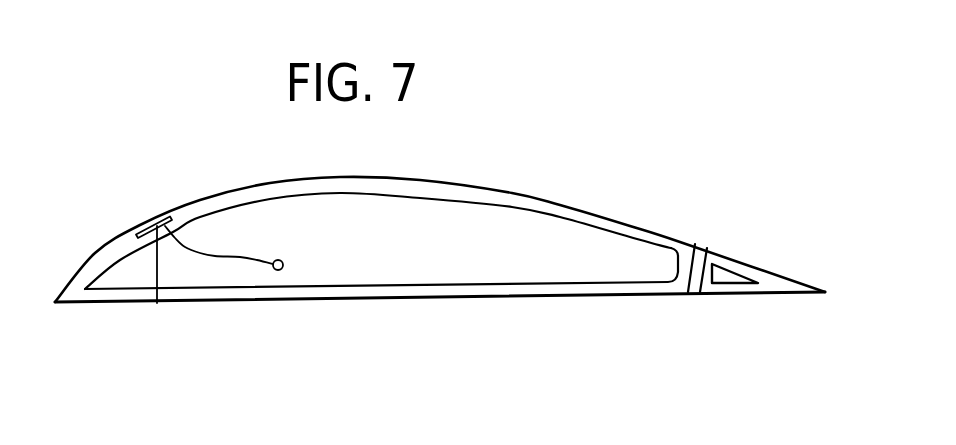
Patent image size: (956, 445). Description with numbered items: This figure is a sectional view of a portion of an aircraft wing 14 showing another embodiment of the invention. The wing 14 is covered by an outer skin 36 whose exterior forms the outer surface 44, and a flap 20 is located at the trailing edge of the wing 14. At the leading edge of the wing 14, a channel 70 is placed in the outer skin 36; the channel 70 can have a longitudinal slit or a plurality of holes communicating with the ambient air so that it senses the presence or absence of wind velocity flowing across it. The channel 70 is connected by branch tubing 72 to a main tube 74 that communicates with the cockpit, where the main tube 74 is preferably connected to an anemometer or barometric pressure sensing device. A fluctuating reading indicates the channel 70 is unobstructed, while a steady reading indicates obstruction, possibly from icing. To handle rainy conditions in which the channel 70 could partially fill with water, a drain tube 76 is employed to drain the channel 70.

The wing 14 is at (635, 258).
The flap 20 is at (747, 265).
The outer skin 36 is at (597, 218).
The outer surface 44 is at (512, 193).
The channel 70 is at (150, 227).
The branch tubing 72 is at (215, 253).
The main tube 74 is at (287, 260).
The drain tube 76 is at (157, 270).